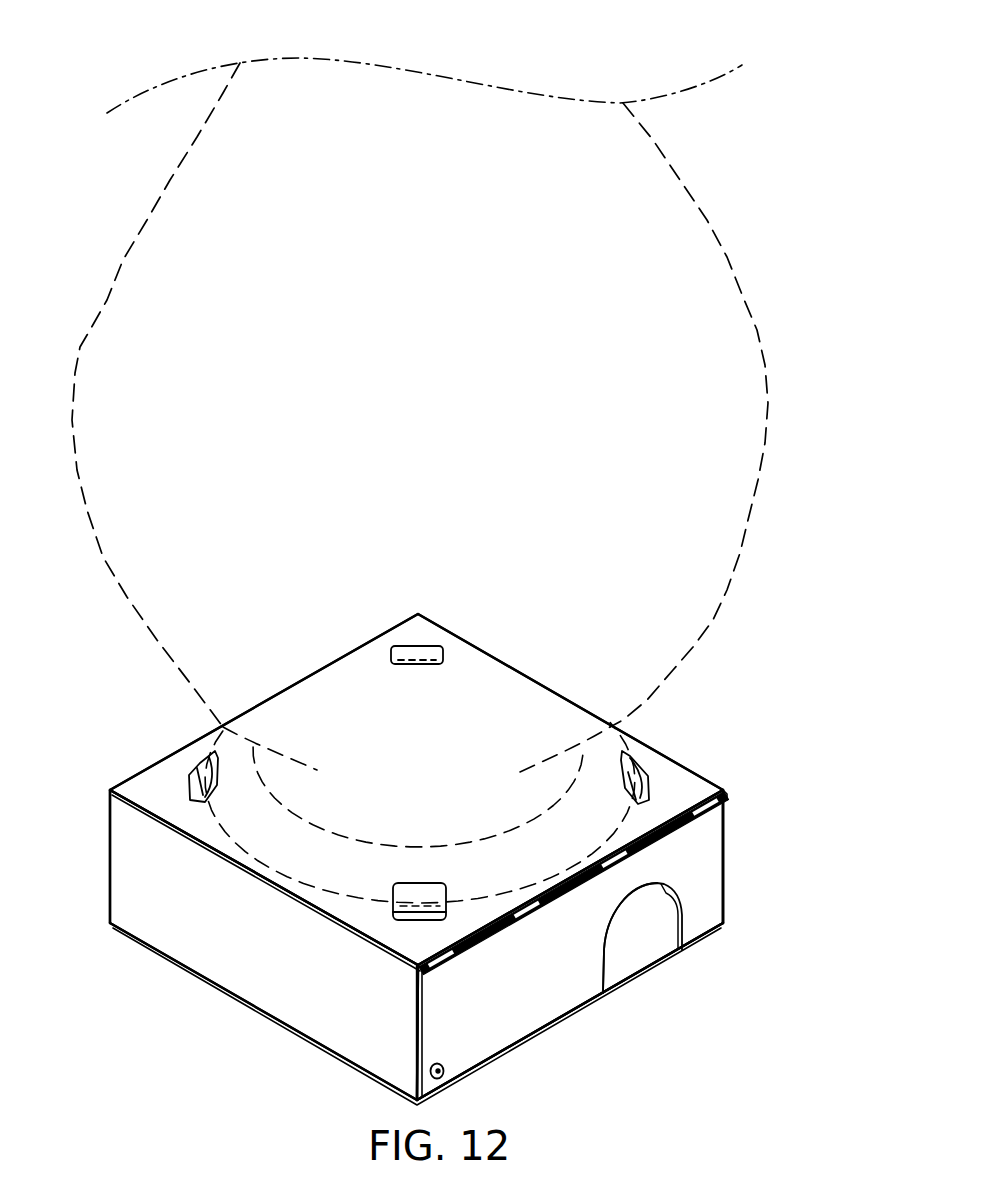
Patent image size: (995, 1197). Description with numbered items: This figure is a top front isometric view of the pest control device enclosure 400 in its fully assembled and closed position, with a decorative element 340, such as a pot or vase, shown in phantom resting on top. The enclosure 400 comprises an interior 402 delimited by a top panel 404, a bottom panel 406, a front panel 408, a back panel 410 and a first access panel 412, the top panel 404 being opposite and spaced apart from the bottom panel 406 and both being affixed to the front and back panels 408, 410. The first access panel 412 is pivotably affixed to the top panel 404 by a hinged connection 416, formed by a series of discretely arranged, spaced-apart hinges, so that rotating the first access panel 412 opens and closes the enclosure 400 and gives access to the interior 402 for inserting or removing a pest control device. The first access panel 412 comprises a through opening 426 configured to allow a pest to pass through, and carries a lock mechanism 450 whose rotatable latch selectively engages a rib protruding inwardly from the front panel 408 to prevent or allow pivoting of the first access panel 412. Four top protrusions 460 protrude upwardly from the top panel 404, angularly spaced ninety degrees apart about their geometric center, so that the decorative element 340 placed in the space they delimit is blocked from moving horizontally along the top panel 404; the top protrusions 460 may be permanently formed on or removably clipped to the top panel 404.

The decorative element 340 is at (740, 553).
The pest control device enclosure 400 is at (687, 725).
The interior 402 is at (633, 953).
The top panel 404 is at (148, 788).
The bottom panel 406 is at (632, 962).
The front panel 408 is at (215, 960).
The back panel 410 is at (735, 853).
The first access panel 412 is at (512, 1016).
The hinged connection 416 is at (707, 838).
The through opening 426 is at (675, 945).
The lock mechanism 450 is at (444, 1072).
The top protrusion 460 is at (433, 645).